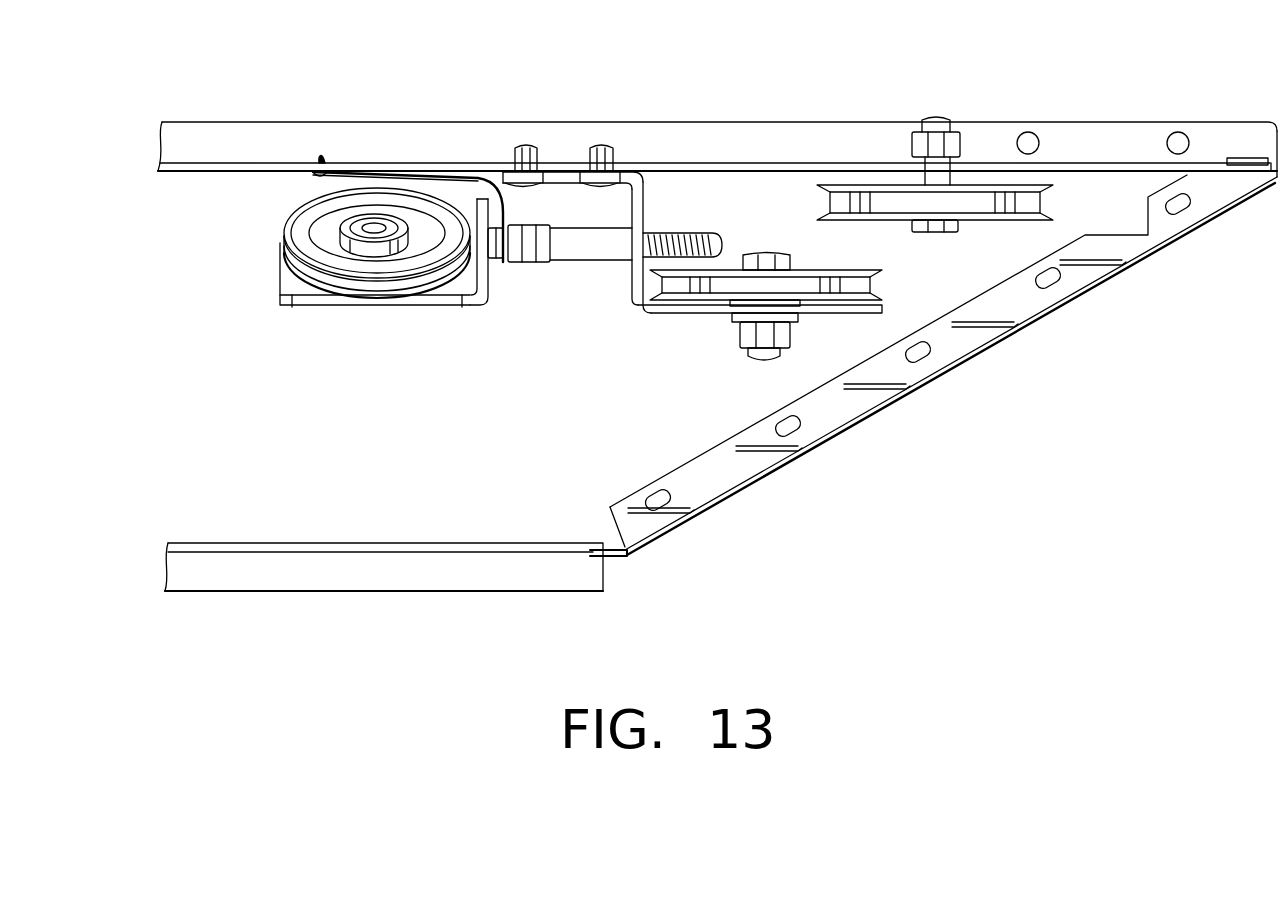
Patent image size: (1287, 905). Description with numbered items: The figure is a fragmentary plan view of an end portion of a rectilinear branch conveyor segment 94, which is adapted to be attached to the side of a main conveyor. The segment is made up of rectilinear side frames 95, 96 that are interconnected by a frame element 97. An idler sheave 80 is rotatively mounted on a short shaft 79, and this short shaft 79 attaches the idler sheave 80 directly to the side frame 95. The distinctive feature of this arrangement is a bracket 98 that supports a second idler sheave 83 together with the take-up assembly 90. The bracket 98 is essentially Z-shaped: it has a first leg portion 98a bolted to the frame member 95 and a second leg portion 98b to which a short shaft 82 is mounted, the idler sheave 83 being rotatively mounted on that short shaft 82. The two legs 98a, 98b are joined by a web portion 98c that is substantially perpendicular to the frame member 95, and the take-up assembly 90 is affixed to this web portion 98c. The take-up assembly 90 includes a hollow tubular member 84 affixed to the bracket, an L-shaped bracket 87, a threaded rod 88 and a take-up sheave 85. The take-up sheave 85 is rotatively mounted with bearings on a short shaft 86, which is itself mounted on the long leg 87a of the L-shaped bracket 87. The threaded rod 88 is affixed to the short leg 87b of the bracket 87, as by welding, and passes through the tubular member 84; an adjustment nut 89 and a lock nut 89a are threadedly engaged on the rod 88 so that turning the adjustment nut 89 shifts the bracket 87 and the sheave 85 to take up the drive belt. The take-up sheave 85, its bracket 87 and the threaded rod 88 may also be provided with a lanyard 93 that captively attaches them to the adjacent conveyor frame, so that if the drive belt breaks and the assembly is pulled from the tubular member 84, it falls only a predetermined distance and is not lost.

The rectilinear branch conveyor segment 94 is at (598, 81).
The lanyard 93 is at (408, 137).
The rectilinear side frame 95 is at (762, 137).
The bracket 98 is at (658, 317).
The first leg portion 98a is at (564, 173).
The second leg portion 98b is at (715, 317).
The web portion 98c is at (628, 297).
The hollow tubular member 84 is at (567, 252).
The adjustment nut 89 is at (533, 227).
The lock nut 89a is at (520, 268).
The take-up assembly 90 is at (535, 278).
The threaded rod 88 is at (687, 233).
The idler sheave 83 is at (823, 287).
The short shaft 82 is at (763, 363).
The short shaft 79 is at (958, 178).
The idler sheave 80 is at (980, 203).
The frame element 97 is at (1028, 300).
The rectilinear side frame 96 is at (483, 592).
The L-shaped bracket 87 is at (462, 300).
The long leg 87a is at (293, 300).
The short leg 87b is at (497, 280).
The take-up sheave 85 is at (293, 225).
The short shaft 86 is at (340, 226).